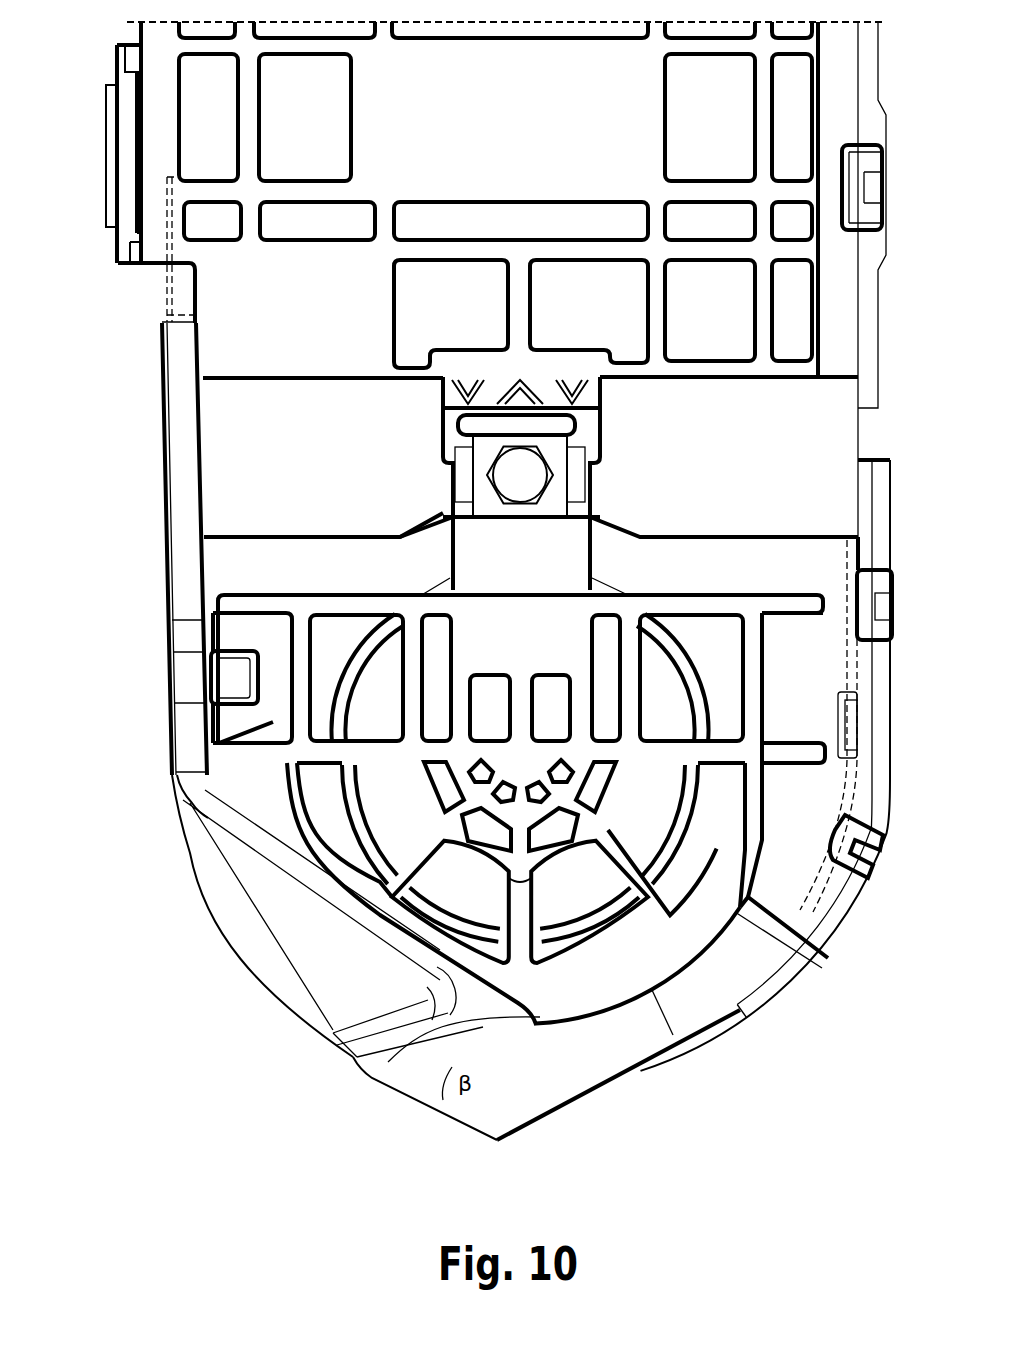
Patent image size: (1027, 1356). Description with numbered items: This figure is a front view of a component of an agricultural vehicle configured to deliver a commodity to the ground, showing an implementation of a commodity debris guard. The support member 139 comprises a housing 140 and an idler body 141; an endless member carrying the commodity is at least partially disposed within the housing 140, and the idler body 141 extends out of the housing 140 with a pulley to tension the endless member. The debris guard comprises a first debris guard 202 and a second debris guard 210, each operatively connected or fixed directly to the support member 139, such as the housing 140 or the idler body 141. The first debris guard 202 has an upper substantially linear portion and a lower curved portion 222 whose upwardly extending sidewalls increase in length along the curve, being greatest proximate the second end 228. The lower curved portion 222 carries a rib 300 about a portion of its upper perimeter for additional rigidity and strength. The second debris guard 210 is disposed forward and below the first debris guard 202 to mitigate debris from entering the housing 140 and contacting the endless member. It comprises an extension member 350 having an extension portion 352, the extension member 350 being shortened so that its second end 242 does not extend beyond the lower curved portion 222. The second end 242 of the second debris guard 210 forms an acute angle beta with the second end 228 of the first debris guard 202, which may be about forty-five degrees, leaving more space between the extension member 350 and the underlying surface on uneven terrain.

The support member 139 is at (90, 177).
The housing 140 is at (512, 133).
The idler body 141 is at (793, 607).
The first debris guard 202 is at (158, 617).
The second debris guard 210 is at (798, 982).
The lower curved portion 222 is at (217, 872).
The second end 228 is at (472, 1025).
The second end 242 is at (478, 1133).
The rib 300 is at (340, 932).
The extension member 350 is at (648, 1073).
The extension portion 352 is at (536, 1078).